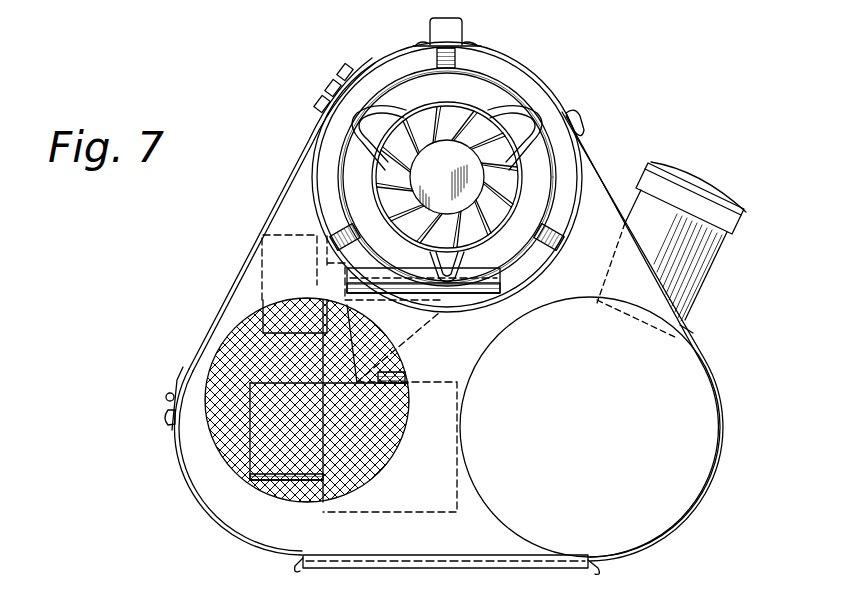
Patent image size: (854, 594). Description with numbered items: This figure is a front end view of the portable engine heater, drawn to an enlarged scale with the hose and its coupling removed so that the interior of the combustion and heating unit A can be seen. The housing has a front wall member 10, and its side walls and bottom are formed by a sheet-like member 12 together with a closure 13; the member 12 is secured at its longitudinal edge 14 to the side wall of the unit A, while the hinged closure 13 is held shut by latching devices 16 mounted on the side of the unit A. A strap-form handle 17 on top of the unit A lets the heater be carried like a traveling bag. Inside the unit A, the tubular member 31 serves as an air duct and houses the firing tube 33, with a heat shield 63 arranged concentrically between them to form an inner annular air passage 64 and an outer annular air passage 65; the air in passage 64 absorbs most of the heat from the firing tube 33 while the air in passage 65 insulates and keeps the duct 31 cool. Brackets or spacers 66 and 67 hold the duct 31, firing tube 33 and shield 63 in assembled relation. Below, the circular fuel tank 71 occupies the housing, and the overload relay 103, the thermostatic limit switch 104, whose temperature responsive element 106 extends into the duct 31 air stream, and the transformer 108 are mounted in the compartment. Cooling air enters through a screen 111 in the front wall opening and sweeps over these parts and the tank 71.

The air warming and combustion assembly A is at (372, 70).
The front wall member 10 is at (602, 185).
The sheet-like member 12 is at (695, 326).
The closure 13 is at (270, 215).
The longitudinal edge 14 is at (583, 120).
The latching devices 16 is at (326, 76).
The handle 17 is at (463, 33).
The tubular member 31 is at (500, 80).
The firing tube 33 is at (472, 103).
The heat shield 63 is at (500, 95).
The inner annular air passage 64 is at (548, 98).
The outer annular air passage 65 is at (568, 112).
The brackets or spacers 66 is at (438, 52).
The brackets or spacers 67 is at (378, 115).
The tank 71 is at (702, 458).
The safety overload switch or aviation relay 103 is at (228, 470).
The thermostatic device or automatic limit switch 104 is at (262, 262).
The temperature responsive element 106 is at (480, 296).
The transformer 108 is at (400, 512).
The screen 111 is at (205, 372).